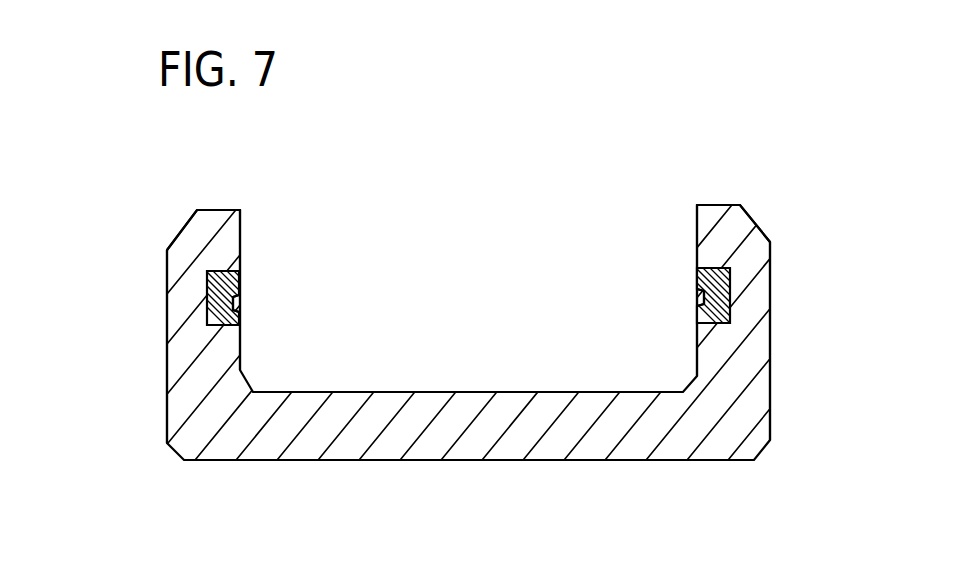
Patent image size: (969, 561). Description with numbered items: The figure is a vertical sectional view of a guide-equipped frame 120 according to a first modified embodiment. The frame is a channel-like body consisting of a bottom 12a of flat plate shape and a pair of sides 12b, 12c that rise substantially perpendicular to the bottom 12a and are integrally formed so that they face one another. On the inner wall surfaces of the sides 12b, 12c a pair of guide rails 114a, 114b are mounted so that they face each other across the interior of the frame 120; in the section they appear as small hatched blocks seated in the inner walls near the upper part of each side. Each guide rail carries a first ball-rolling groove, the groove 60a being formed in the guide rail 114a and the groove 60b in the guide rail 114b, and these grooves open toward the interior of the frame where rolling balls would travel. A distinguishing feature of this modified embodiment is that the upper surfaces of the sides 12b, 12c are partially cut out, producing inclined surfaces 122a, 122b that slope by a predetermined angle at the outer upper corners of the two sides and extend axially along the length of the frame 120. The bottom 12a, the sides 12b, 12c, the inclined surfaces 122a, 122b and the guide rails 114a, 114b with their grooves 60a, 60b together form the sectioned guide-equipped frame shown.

The guide-equipped frame 120 is at (750, 168).
The bottom 12a is at (467, 433).
The side 12b is at (190, 366).
The side 12c is at (740, 337).
The inclined surface 122a is at (185, 224).
The inclined surface 122b is at (757, 214).
The guide rail 114a is at (207, 297).
The guide rail 114b is at (730, 292).
The first ball-rolling groove 60a is at (240, 297).
The first ball-rolling groove 60b is at (697, 292).